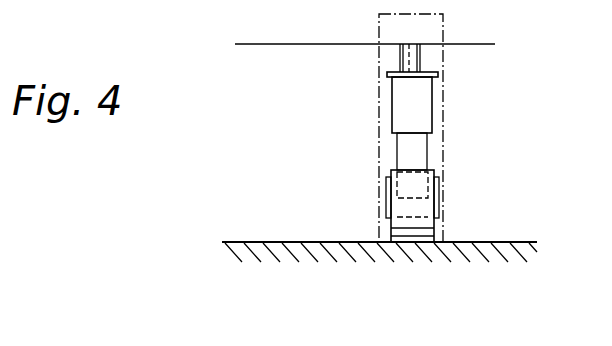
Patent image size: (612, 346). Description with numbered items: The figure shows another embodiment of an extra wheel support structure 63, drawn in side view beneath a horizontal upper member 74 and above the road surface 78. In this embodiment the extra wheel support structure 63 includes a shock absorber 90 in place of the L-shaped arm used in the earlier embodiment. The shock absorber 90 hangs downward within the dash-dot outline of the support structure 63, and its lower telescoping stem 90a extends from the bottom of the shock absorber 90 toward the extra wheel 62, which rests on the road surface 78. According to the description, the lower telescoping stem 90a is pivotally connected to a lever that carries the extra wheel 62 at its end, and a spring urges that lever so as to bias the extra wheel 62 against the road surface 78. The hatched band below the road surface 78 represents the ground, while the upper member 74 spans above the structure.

The upper support member 74 is at (339, 44).
The extra wheel support structure 63 is at (372, 133).
The shock absorber 90 is at (432, 106).
The lower telescoping stem 90a is at (415, 154).
The extra wheel 62 is at (408, 237).
The road surface 78 is at (296, 242).